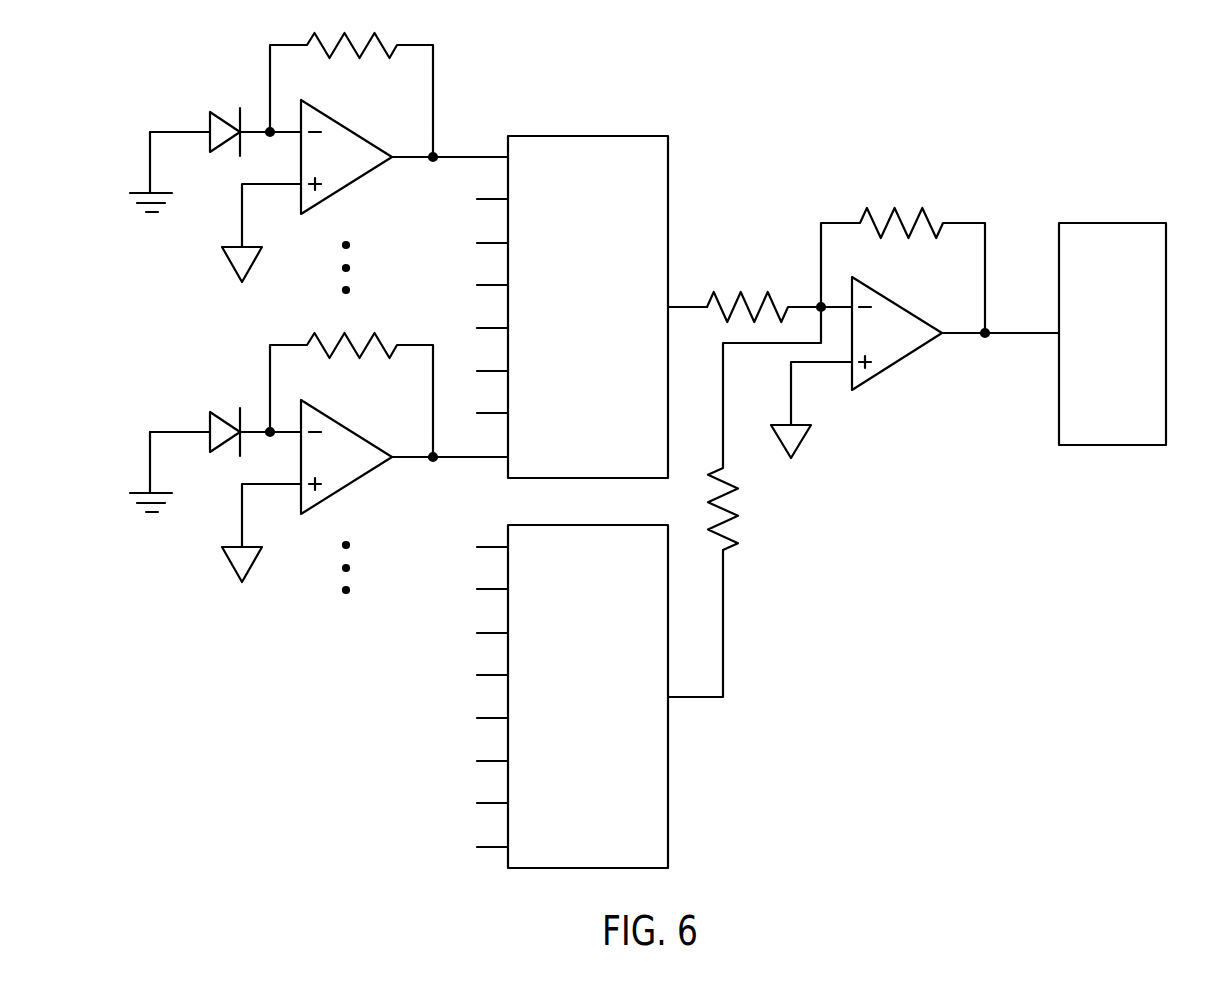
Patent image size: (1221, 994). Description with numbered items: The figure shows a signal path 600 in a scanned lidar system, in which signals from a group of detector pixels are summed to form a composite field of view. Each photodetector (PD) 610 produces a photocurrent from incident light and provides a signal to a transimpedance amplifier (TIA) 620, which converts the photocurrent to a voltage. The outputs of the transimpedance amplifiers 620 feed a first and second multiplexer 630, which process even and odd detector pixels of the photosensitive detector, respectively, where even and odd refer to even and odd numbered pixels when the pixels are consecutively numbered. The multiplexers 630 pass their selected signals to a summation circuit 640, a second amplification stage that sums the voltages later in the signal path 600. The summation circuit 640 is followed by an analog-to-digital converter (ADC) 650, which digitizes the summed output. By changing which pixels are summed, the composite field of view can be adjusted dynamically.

The signal path 600 is at (1073, 75).
The photodetector 610 is at (228, 142).
The transimpedance amplifier 620 is at (347, 128).
The multiplexer 630 is at (588, 136).
The summation circuit 640 is at (897, 305).
The analog-to-digital converter 650 is at (1113, 223).